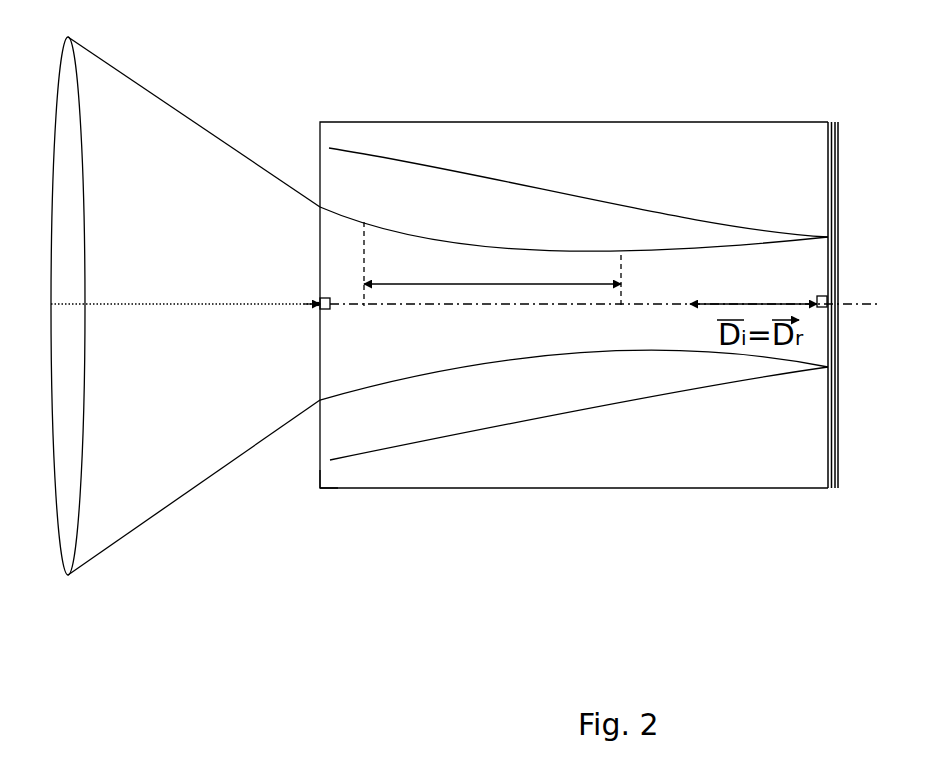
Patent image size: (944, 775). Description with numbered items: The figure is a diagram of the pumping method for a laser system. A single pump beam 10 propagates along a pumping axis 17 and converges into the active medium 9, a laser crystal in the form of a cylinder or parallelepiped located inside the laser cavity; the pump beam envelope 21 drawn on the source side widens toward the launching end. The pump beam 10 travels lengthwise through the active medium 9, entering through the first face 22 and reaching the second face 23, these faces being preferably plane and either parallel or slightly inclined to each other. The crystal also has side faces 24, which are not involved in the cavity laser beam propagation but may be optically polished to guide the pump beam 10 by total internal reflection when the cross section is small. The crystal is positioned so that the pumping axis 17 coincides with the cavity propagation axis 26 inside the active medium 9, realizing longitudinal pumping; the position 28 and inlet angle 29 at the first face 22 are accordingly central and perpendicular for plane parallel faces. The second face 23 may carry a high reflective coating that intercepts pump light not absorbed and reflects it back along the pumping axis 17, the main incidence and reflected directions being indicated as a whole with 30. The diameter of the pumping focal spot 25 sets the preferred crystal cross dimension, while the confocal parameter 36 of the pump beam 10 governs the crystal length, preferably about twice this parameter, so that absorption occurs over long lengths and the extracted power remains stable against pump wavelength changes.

The active medium 9 is at (612, 492).
The pump beam 10 is at (183, 113).
The pumping axis 17 is at (185, 300).
The horn wall 21 is at (172, 527).
The first face 22 is at (328, 473).
The second face 23 is at (820, 450).
The side faces 24 is at (436, 122).
The diameter of the pumping focal spot 25 is at (625, 262).
The cavity propagation axis 26 is at (460, 306).
The position 28 is at (306, 313).
The inlet angle 29 is at (318, 304).
The main incidence and reflected directions 30 is at (792, 290).
The confocal parameter 36 is at (445, 283).